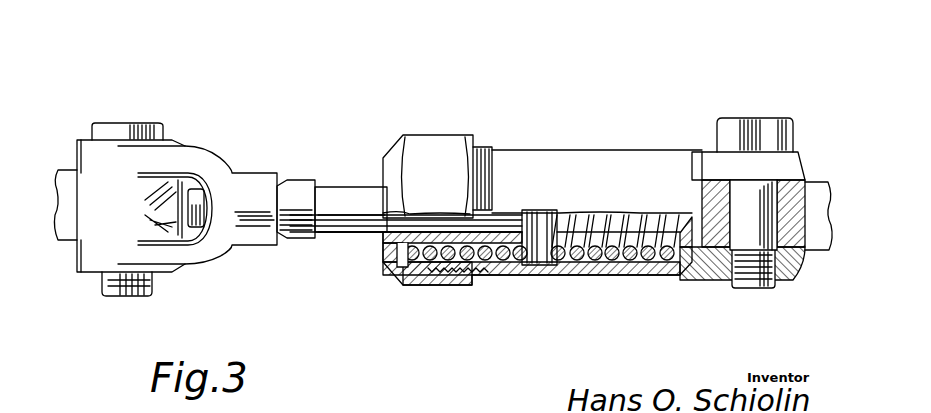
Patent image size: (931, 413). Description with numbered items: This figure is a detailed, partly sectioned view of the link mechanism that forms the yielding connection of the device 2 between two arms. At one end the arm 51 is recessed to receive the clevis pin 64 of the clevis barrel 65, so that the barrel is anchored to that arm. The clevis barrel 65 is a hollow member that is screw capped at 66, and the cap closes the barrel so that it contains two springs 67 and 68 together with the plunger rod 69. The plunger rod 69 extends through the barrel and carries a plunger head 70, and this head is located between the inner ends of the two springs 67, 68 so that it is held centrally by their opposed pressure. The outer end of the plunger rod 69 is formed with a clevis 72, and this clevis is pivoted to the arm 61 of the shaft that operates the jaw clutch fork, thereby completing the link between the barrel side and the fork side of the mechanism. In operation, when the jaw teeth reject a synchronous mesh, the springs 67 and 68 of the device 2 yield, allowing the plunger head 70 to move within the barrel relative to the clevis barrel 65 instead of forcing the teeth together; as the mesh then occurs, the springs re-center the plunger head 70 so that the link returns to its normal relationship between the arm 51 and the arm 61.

The tensioning device 2 is at (527, 148).
The arm 51 is at (822, 183).
The arm 61 is at (67, 173).
The clevis pin 64 is at (753, 122).
The clevis barrel 65 is at (593, 162).
The screw cap 66 is at (435, 147).
The spring 67 is at (628, 256).
The spring 68 is at (503, 259).
The plunger rod 69 is at (342, 187).
The plunger head 70 is at (538, 256).
The clevis 72 is at (250, 177).